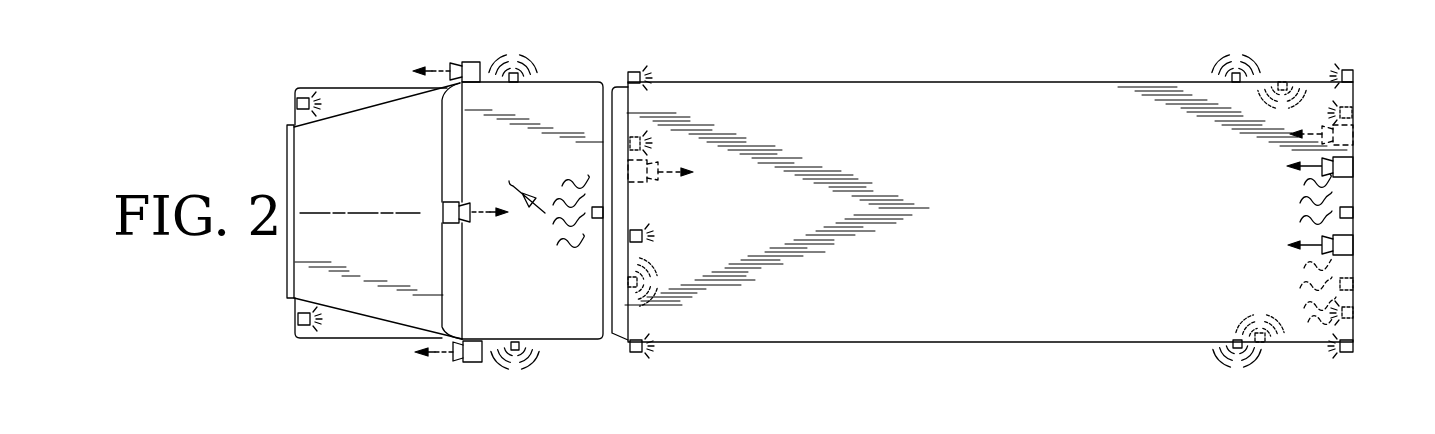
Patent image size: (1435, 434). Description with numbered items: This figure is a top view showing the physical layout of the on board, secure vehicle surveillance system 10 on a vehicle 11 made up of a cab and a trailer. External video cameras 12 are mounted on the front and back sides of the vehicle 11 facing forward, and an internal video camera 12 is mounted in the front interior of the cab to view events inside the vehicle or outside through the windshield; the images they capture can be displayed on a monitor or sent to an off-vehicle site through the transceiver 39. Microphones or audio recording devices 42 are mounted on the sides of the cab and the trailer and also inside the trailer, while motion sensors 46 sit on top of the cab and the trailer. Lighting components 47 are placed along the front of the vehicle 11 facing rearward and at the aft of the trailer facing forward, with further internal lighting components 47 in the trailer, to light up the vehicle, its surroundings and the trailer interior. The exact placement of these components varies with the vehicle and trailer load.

The on board, secure vehicle surveillance system 10 is at (1350, 46).
The vehicle 11 is at (900, 82).
The video camera 12 is at (447, 210).
The transceiver 39 is at (540, 208).
The microphone or audio recording device 42 is at (517, 83).
The motion sensor 46 is at (598, 219).
The lighting component 47 is at (298, 102).